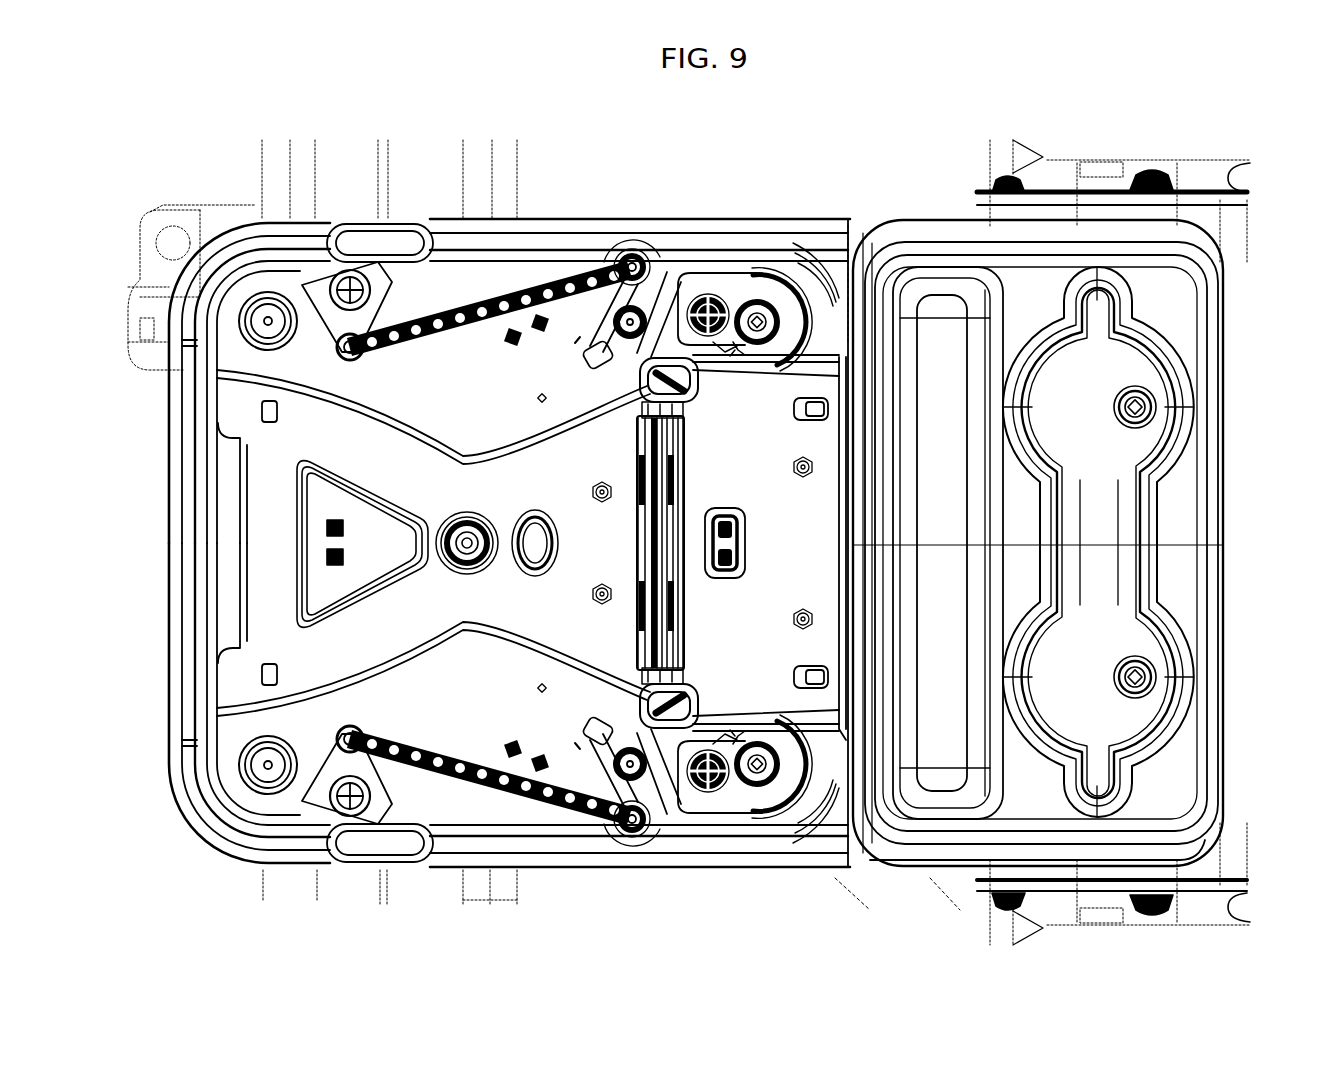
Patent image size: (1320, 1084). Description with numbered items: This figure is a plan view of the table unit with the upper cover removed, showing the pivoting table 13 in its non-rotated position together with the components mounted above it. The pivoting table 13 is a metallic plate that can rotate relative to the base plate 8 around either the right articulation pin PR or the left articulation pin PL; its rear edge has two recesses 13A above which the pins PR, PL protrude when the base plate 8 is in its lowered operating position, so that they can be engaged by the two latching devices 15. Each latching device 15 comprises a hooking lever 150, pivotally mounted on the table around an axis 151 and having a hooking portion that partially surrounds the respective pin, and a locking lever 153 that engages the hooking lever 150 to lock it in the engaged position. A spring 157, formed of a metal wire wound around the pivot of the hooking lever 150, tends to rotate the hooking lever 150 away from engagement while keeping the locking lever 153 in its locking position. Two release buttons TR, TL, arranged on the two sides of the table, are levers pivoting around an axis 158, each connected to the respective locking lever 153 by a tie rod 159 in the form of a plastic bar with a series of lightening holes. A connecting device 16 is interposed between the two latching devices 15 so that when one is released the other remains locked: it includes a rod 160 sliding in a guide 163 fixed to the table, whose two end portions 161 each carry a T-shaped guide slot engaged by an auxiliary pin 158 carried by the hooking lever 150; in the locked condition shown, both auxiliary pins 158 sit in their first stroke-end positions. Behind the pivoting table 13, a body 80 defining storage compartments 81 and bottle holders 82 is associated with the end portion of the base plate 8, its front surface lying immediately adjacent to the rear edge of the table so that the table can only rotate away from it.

The base plate 8 is at (500, 214).
The pivoting table 13 is at (270, 575).
The recesses 13A is at (848, 226).
The latching device 15 is at (786, 192).
The connecting device 16 is at (628, 551).
The body 80 is at (1228, 581).
The storage compartment 81 is at (940, 372).
The bottle holder 82 is at (1100, 368).
The hooking lever 150 is at (740, 292).
The axis 151 is at (667, 298).
The locking lever 153 is at (605, 320).
The spring 157 is at (583, 358).
The axis / auxiliary pin 158 is at (352, 270).
The tie rod 159 is at (447, 342).
The rod 160 is at (658, 520).
The end portion 161 is at (690, 394).
The guide 163 is at (637, 458).
The right release button TR is at (419, 214).
The left release button TL is at (357, 873).
The right articulation pin PR is at (760, 333).
The left articulation pin PL is at (763, 753).